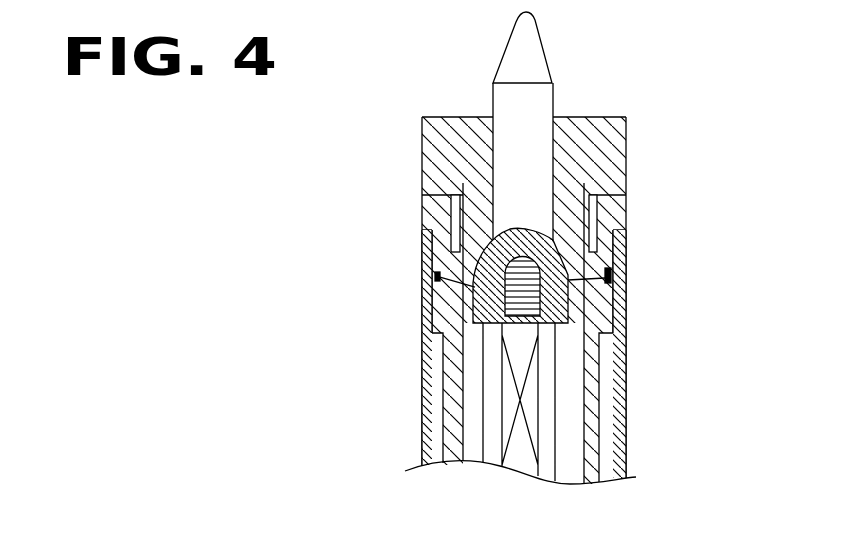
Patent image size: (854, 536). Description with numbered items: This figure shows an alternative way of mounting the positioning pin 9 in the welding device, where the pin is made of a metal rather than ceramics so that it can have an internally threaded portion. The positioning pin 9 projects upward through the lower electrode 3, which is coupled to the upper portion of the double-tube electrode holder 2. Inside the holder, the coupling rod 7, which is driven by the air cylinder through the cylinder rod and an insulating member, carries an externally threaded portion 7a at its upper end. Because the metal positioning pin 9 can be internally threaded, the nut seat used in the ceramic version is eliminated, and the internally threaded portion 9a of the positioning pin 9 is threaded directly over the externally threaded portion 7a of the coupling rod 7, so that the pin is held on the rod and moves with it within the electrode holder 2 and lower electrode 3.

The electrode holder 2 is at (621, 347).
The lower electrode 3 is at (612, 158).
The coupling rod 7 is at (547, 430).
The externally threaded portion 7a is at (607, 280).
The positioning pin 9 is at (540, 100).
The internally threaded portion 9a is at (435, 277).